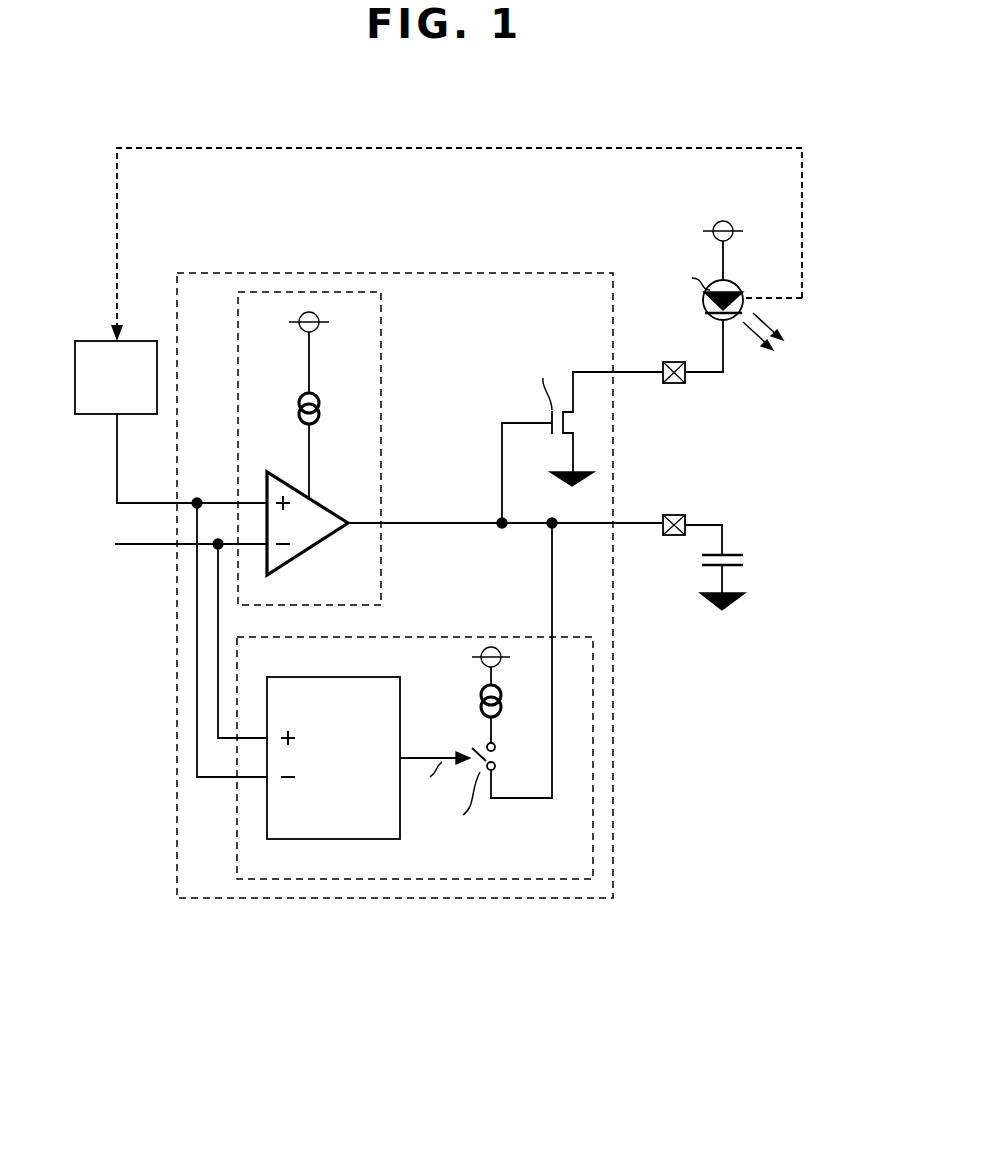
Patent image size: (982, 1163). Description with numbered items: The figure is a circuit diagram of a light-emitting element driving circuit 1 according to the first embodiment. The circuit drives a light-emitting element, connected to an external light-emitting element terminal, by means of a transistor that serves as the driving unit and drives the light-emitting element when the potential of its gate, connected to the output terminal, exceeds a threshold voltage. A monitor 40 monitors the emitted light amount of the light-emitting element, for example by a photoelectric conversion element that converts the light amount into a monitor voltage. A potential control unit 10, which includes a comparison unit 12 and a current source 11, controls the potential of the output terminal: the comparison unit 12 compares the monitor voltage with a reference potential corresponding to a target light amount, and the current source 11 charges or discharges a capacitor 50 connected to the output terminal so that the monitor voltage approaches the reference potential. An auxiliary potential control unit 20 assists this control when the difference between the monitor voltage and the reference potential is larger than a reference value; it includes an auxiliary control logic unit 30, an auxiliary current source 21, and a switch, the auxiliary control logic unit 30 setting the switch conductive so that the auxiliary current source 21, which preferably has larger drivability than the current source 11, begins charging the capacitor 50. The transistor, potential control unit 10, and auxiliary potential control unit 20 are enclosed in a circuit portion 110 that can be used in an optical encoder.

The light-emitting element driving circuit 1 is at (204, 929).
The potential control unit 10 is at (381, 350).
The current source 11 is at (317, 398).
The comparison unit 12 is at (312, 553).
The auxiliary potential control unit 20 is at (593, 722).
The auxiliary current source 21 is at (483, 690).
The auxiliary control logic unit 30 is at (342, 677).
The monitor 40 is at (88, 340).
The capacitor 50 is at (730, 548).
The circuit portion 110 is at (452, 273).